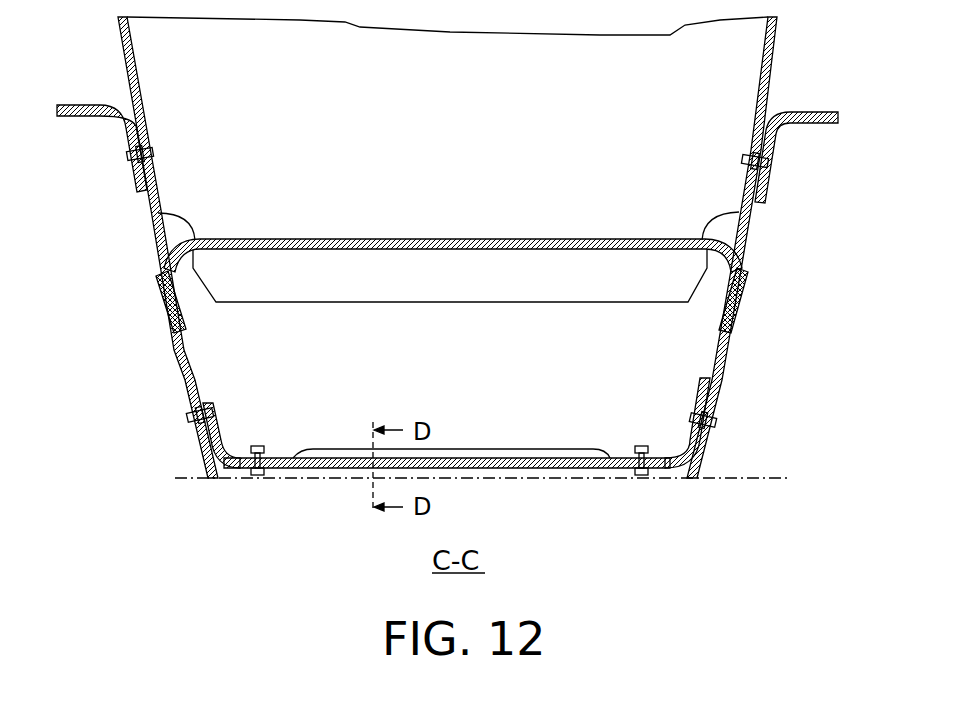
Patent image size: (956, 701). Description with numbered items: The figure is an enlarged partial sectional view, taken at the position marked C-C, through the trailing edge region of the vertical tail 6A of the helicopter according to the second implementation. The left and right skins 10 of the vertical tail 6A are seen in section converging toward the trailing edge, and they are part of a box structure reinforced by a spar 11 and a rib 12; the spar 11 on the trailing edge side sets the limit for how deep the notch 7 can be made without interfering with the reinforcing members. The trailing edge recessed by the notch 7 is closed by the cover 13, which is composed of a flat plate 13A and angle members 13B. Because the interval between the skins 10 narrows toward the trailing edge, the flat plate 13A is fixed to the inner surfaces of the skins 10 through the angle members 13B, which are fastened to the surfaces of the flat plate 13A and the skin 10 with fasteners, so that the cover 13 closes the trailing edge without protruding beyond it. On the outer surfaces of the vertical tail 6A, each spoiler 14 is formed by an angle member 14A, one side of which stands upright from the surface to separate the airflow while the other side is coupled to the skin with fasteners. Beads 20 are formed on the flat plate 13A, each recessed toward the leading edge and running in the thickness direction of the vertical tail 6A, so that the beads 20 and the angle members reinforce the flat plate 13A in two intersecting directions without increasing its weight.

The vertical tail 6A is at (161, 328).
The notch 7 is at (600, 524).
The skin 10 is at (726, 360).
The spar 11 is at (156, 247).
The rib 12 is at (428, 165).
The cover 13 is at (335, 470).
The flat plate 13A is at (486, 469).
The angle member 13B is at (222, 450).
The spoiler 14 is at (91, 104).
The angle member 14A is at (112, 118).
The bead 20 is at (505, 449).